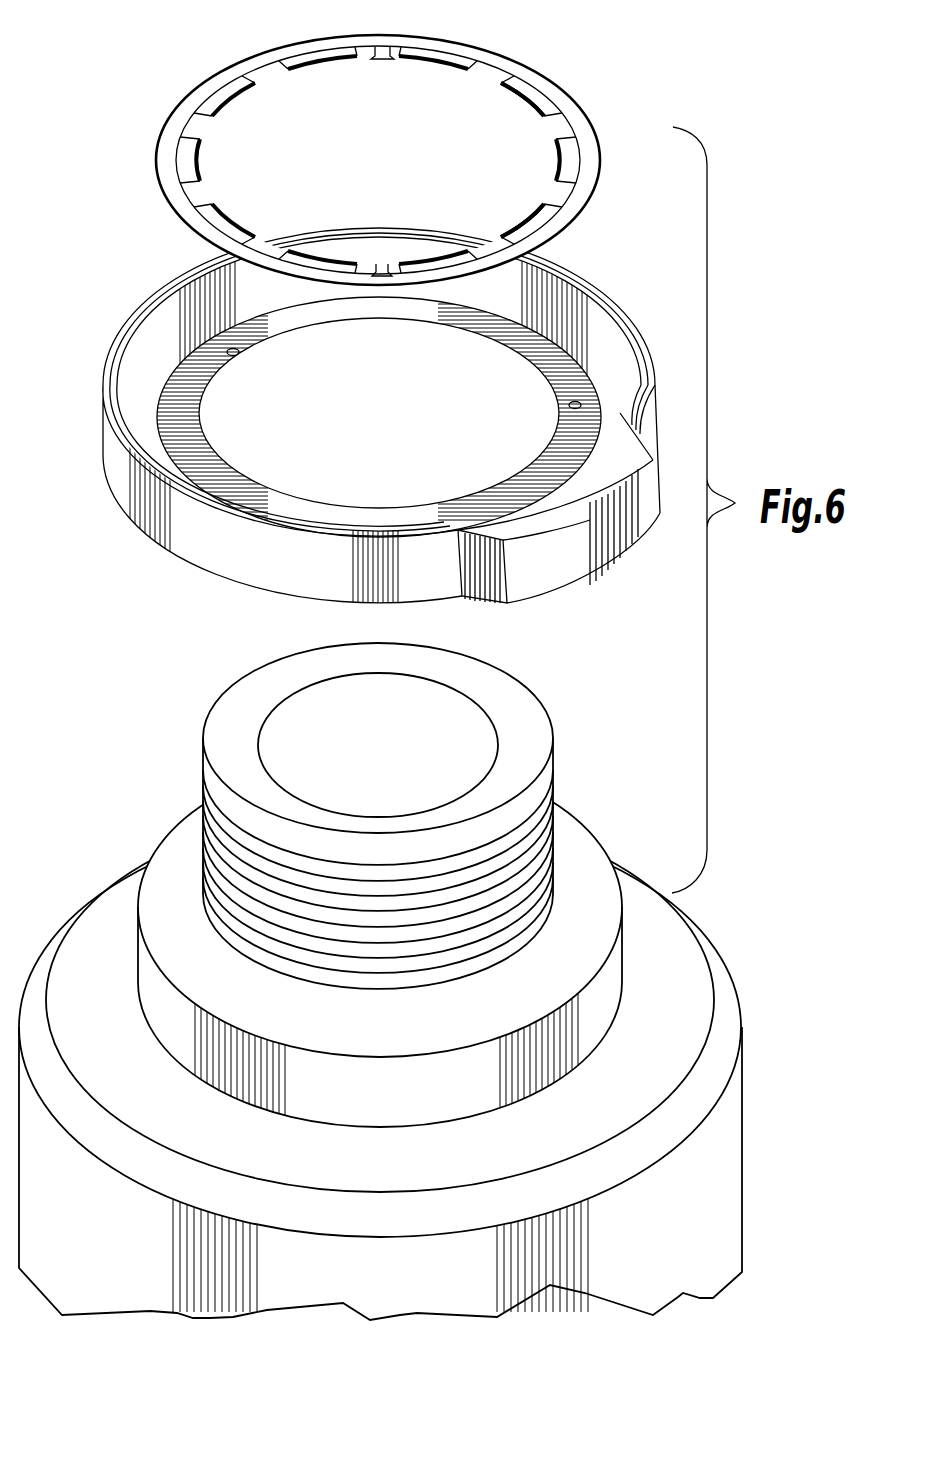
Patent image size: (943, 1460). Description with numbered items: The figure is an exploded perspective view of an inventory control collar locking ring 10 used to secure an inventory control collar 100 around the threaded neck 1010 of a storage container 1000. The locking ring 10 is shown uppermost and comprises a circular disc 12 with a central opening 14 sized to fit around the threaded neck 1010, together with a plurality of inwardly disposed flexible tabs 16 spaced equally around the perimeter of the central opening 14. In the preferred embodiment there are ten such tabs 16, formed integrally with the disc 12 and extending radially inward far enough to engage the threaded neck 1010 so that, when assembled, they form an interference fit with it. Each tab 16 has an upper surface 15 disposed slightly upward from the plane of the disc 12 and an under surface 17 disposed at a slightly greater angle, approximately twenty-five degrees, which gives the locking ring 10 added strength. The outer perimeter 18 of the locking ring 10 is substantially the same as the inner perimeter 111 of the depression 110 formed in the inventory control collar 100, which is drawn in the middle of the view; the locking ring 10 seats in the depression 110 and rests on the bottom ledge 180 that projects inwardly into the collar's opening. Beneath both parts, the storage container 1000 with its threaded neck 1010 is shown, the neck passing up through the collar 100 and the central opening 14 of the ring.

The inventory control collar locking ring 10 is at (582, 90).
The circular disc 12 is at (530, 73).
The central opening 14 is at (385, 162).
The upper surface 15 is at (232, 85).
The flexible tabs 16 is at (527, 207).
The under surface 17 is at (318, 68).
The outer perimeter 18 is at (600, 160).
The inventory control collar 100 is at (186, 567).
The depression 110 is at (600, 343).
The inner perimeter 111 is at (565, 395).
The bottom ledge 180 is at (243, 357).
The storage container 1000 is at (397, 1165).
The threaded neck 1010 is at (200, 768).